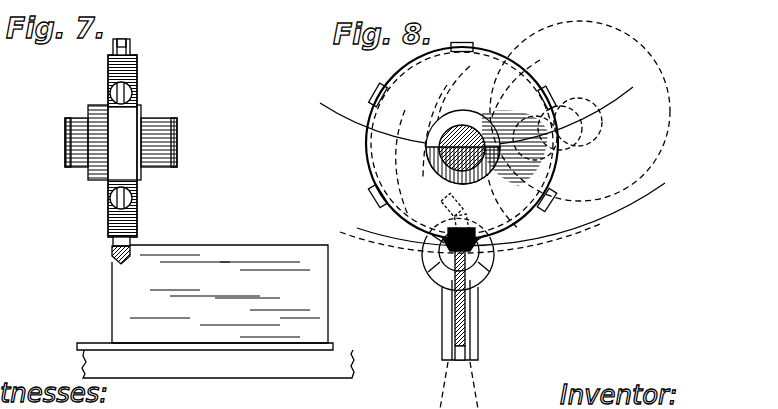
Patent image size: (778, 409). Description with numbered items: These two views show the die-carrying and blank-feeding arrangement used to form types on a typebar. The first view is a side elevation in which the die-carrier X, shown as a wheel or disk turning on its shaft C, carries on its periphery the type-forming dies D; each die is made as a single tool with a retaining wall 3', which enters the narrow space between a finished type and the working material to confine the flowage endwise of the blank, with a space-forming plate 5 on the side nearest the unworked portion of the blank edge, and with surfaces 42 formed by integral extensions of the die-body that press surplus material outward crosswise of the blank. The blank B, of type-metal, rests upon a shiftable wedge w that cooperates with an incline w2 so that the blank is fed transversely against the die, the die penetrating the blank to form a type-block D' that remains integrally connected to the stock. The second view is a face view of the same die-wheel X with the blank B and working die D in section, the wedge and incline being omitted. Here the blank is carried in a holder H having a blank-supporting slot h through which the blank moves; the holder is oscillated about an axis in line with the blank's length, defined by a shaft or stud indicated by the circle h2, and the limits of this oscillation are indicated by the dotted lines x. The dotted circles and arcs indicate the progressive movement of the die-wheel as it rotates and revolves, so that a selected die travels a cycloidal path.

In FIG. 7, the die-carrier X is at (137, 74).
In FIG. 8, the die-carrier X is at (480, 143).
In FIG. 7, the die D is at (95, 146).
In FIG. 8, the die D is at (443, 134).
In FIG. 7, the retaining wall 3' is at (77, 148).
In FIG. 7, the space-forming die 5 is at (131, 41).
In FIG. 7, the die-body extension surface 42 is at (137, 97).
In FIG. 8, the die-body extension surface 42 is at (450, 258).
In FIG. 7, the shaft C is at (177, 130).
In FIG. 8, the shaft C is at (588, 128).
In FIG. 7, the type-block D' is at (101, 259).
In FIG. 8, the type-block D' is at (434, 250).
In FIG. 7, the blank B is at (220, 294).
In FIG. 8, the blank B is at (473, 257).
In FIG. 7, the wedge w is at (88, 345).
In FIG. 7, the incline w2 is at (238, 364).
In FIG. 8, the circle indicating oscillatory axis h2 is at (486, 252).
In FIG. 8, the holder H is at (478, 320).
In FIG. 8, the blank-supporting slot h is at (456, 348).
In FIG. 8, the dotted lines indicating oscillation limits x is at (480, 400).